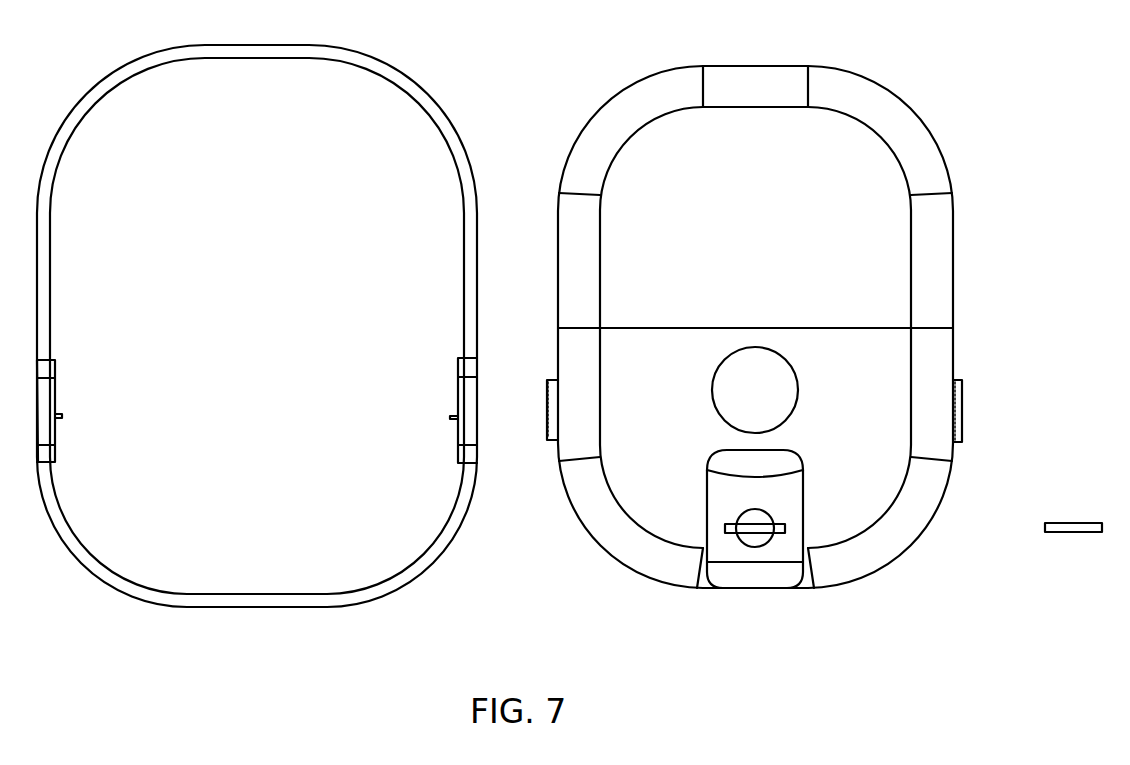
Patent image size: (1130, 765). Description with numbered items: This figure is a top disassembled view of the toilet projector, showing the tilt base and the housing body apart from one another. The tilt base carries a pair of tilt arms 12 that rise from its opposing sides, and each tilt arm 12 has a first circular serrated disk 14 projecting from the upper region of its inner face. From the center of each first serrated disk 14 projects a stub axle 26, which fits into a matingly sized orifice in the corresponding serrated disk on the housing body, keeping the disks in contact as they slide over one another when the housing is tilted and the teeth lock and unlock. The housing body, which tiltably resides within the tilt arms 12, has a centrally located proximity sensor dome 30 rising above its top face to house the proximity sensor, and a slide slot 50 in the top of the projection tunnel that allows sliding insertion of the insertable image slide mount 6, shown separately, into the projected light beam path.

The tilt arm 12 is at (466, 396).
The stub axle 26 is at (61, 415).
The first circular serrated disk 14 is at (963, 410).
The proximity sensor dome 30 is at (744, 372).
The slide slot 50 is at (758, 530).
The insertable image slide mount 6 is at (1078, 533).